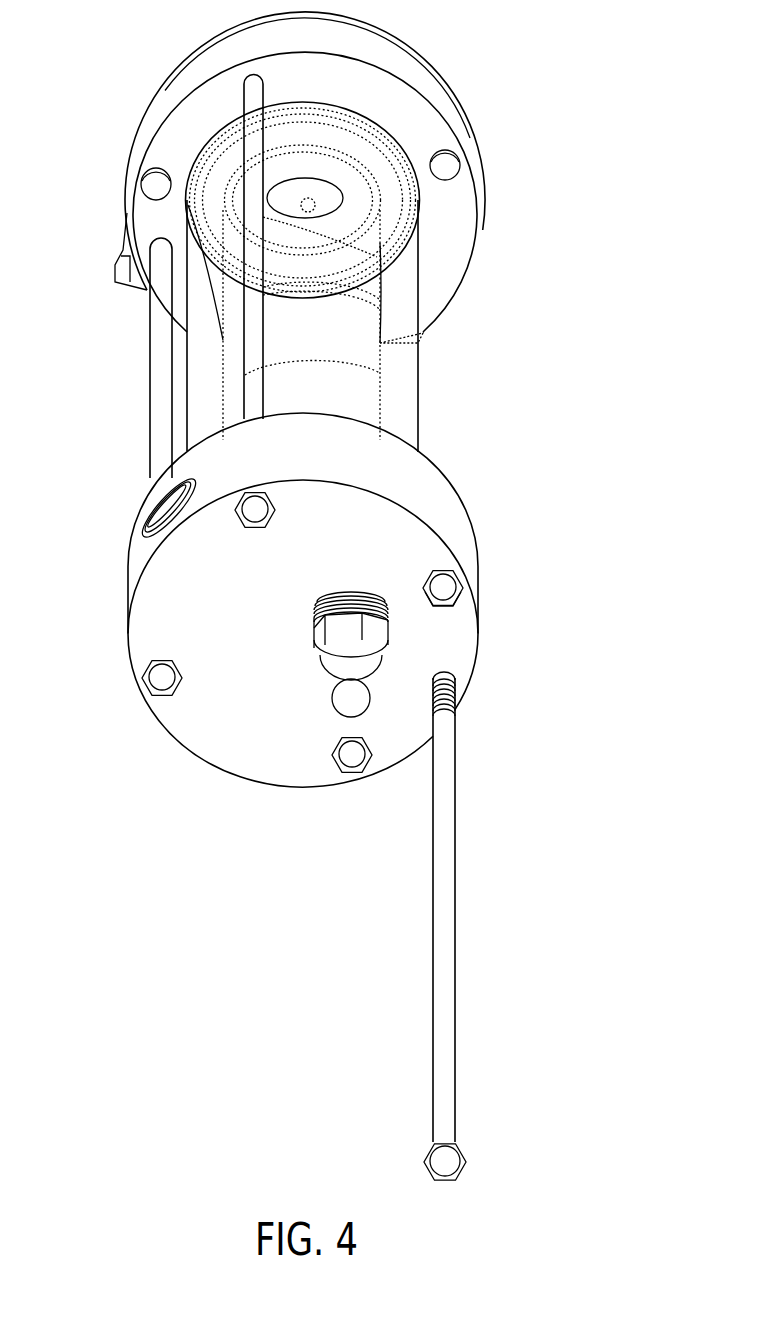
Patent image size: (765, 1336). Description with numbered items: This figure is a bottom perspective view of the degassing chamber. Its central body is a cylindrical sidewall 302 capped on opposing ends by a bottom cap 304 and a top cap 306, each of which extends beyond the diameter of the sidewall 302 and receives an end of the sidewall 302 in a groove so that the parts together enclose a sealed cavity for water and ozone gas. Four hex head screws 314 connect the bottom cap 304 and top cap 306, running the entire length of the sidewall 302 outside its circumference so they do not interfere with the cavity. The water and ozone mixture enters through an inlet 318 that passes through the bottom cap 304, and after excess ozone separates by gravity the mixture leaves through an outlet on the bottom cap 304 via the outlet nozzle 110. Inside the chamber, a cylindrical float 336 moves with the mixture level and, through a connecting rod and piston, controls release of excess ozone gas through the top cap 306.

The top cap 306 is at (420, 80).
The cylindrical sidewall 302 is at (407, 277).
The cylindrical float 336 is at (370, 368).
The bottom cap 304 is at (453, 522).
The inlet 318 is at (140, 500).
The outlet nozzle 110 is at (383, 643).
The hex head screws 314 is at (255, 268).